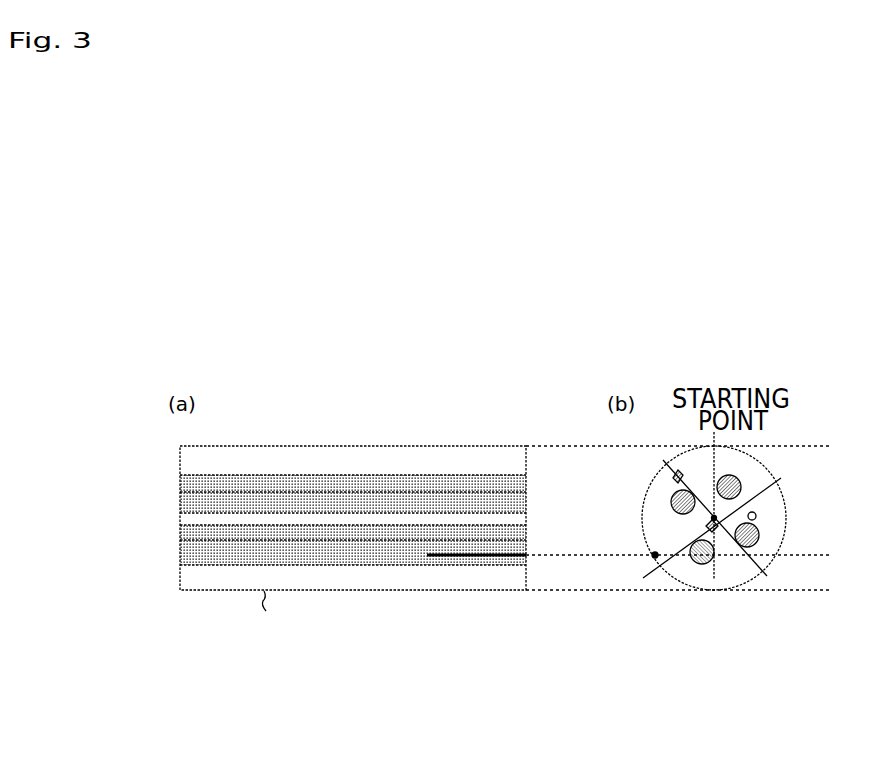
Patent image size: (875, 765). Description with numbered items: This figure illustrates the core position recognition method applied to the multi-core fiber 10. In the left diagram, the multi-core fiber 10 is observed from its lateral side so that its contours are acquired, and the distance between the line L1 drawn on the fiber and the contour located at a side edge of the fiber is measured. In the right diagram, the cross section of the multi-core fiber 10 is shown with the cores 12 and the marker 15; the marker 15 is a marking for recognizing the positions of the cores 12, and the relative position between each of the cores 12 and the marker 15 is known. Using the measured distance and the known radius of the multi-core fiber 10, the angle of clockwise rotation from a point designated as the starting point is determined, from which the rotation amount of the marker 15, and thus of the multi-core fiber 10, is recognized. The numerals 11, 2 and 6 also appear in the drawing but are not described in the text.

The multi-core fiber 10 is at (752, 580).
The reference point on cladding outline 11 is at (650, 560).
The cores 12 is at (517, 446).
The marker 15 is at (678, 470).
The center of fiber 2 is at (708, 519).
The small core / marker 6 is at (752, 514).
The line L1 is at (497, 557).